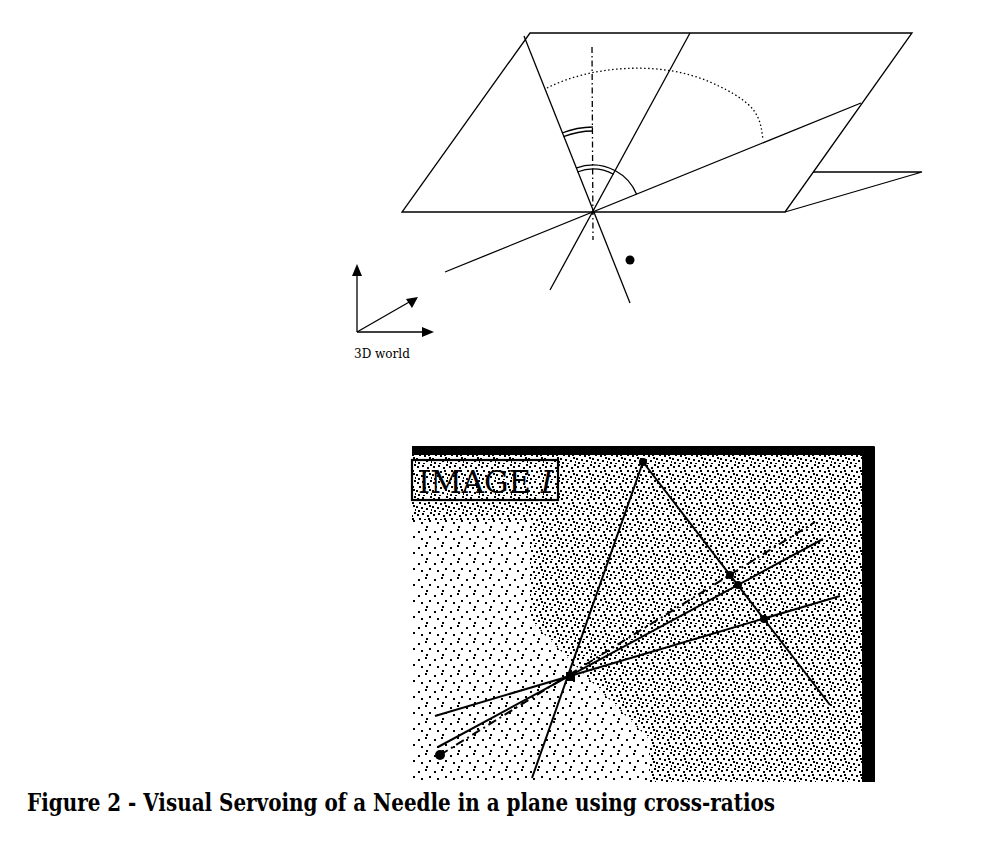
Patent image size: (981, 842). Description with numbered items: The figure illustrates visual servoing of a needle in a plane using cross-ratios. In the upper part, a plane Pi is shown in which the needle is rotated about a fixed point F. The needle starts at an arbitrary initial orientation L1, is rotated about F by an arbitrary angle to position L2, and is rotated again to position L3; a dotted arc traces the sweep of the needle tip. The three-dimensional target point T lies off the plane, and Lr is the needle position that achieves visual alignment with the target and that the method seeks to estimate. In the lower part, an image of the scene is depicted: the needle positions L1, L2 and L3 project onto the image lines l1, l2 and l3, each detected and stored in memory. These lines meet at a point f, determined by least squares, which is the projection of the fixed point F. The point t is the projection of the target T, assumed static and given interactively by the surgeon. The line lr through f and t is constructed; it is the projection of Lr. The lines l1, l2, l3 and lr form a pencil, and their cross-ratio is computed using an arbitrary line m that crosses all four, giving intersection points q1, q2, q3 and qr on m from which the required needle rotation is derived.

The plane Pi is at (662, 122).
The initial orientation of the needle L1 is at (653, 183).
The second needle position L2 is at (627, 161).
The third needle position L3 is at (570, 169).
The target needle position Lr is at (591, 139).
The fixed point F is at (602, 221).
The 3D target point T is at (637, 271).
The image line l1 is at (642, 655).
The image line l2 is at (638, 641).
The image line l3 is at (587, 620).
The target image line lr is at (627, 625).
The arbitrary line m is at (736, 595).
The intersection point q1 is at (758, 632).
The intersection point q2 is at (731, 599).
The intersection point q3 is at (627, 471).
The intersection point qr is at (717, 574).
The intersection point f is at (574, 687).
The projected target point t is at (431, 762).